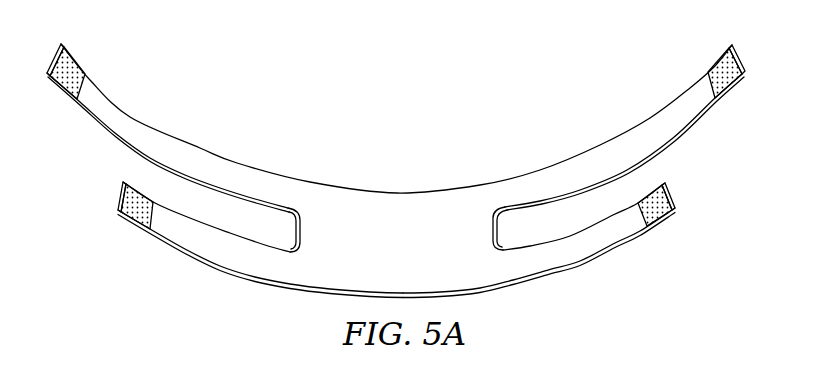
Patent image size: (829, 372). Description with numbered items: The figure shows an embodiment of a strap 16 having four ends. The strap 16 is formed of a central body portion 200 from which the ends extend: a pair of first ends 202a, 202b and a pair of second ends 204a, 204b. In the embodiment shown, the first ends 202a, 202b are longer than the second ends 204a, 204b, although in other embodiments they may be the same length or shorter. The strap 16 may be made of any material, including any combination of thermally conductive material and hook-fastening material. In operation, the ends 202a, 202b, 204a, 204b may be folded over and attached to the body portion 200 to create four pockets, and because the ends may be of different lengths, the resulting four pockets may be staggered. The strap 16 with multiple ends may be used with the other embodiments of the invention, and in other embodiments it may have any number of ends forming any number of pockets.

The strap 16 is at (396, 184).
The body portion 200 is at (392, 210).
The first end 202a is at (682, 107).
The first end 202b is at (100, 102).
The second end 204a is at (598, 240).
The second end 204b is at (196, 243).